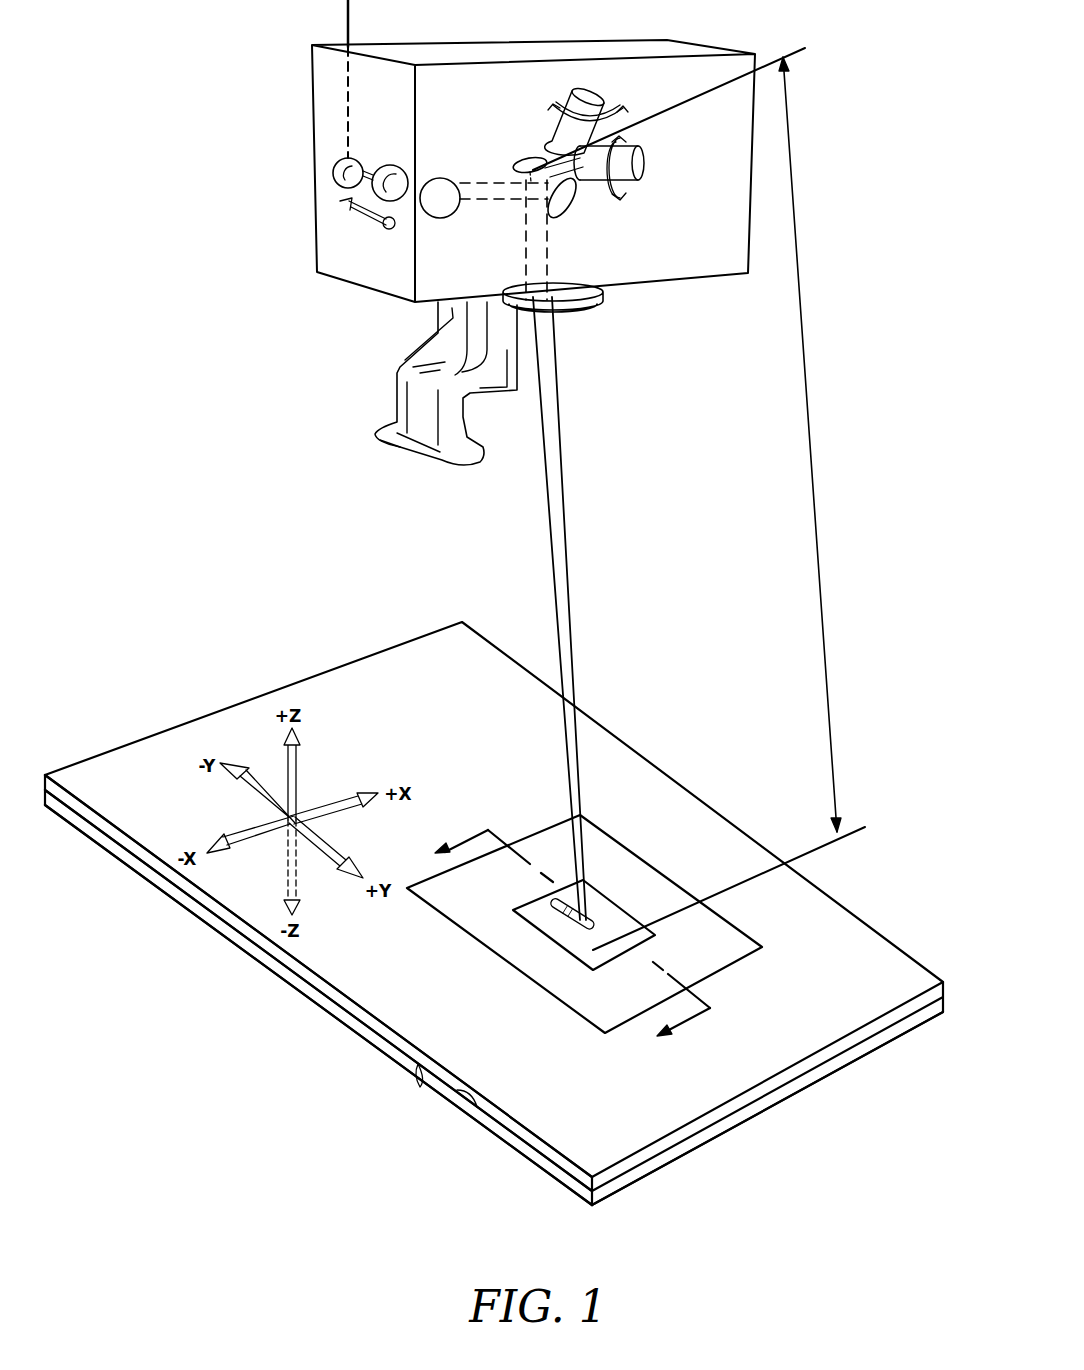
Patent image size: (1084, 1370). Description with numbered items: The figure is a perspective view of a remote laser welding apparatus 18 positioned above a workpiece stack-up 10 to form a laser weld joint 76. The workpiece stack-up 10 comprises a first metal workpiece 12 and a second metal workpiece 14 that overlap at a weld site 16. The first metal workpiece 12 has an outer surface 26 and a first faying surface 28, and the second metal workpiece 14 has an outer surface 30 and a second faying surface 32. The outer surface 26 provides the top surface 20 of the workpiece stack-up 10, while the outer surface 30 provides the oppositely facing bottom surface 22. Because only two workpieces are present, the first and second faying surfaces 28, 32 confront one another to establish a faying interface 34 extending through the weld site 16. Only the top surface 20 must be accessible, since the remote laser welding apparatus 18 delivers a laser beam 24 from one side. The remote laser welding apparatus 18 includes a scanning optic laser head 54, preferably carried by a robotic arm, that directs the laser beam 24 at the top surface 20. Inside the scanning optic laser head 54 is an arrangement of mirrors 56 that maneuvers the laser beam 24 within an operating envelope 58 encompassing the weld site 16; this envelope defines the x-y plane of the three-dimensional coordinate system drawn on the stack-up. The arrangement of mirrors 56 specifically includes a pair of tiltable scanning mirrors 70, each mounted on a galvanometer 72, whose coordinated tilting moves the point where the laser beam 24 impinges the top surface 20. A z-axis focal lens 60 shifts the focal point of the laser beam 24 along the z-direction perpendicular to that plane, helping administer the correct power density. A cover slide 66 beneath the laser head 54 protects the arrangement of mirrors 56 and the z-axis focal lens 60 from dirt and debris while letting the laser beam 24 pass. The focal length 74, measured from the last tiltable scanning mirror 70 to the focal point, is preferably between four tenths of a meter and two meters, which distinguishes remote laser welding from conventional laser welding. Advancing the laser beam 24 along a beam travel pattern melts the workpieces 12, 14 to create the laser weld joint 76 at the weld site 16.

The workpiece stack-up 10 is at (227, 953).
The first metal workpiece 12 is at (307, 973).
The second metal workpiece 14 is at (317, 1002).
The weld site 16 is at (527, 920).
The remote laser welding apparatus 18 is at (290, 248).
The top surface 20 is at (875, 982).
The bottom surface 22 is at (798, 1095).
The laser beam 24 is at (555, 497).
The outer surface 26 is at (418, 1025).
The first faying surface 28 is at (437, 1090).
The outer surface 30 is at (517, 1148).
The second faying surface 32 is at (443, 1103).
The faying interface 34 is at (387, 1055).
The scanning optic laser head 54 is at (312, 102).
The arrangement of mirrors 56 is at (437, 173).
The operating envelope 58 is at (545, 825).
The z-axis focal lens 60 is at (405, 203).
The cover slide 66 is at (593, 305).
The tiltable scanning mirrors 70 is at (510, 160).
The galvanometer 72 is at (587, 110).
The focal length 74 is at (824, 403).
The laser weld joint 76 is at (560, 913).